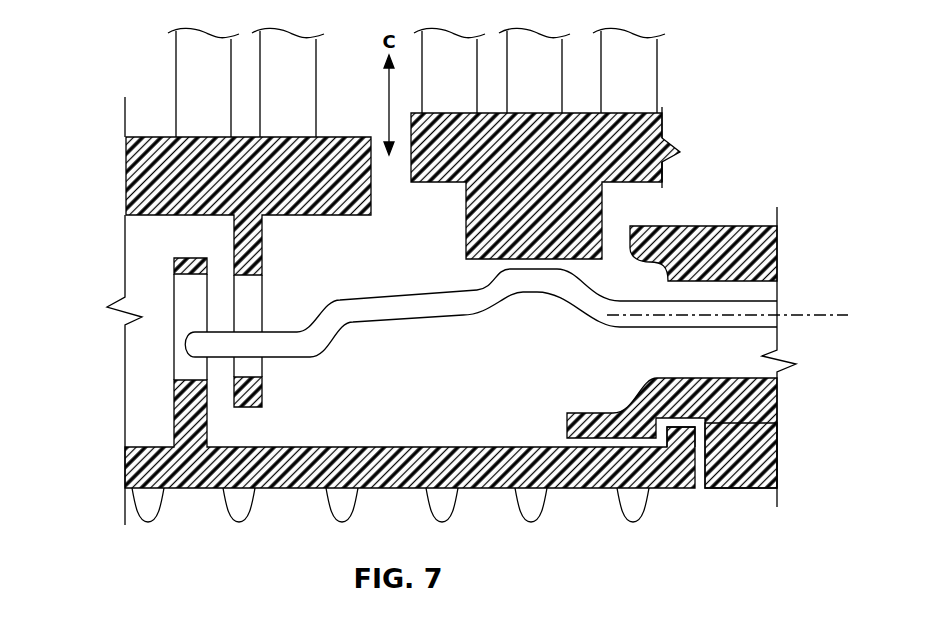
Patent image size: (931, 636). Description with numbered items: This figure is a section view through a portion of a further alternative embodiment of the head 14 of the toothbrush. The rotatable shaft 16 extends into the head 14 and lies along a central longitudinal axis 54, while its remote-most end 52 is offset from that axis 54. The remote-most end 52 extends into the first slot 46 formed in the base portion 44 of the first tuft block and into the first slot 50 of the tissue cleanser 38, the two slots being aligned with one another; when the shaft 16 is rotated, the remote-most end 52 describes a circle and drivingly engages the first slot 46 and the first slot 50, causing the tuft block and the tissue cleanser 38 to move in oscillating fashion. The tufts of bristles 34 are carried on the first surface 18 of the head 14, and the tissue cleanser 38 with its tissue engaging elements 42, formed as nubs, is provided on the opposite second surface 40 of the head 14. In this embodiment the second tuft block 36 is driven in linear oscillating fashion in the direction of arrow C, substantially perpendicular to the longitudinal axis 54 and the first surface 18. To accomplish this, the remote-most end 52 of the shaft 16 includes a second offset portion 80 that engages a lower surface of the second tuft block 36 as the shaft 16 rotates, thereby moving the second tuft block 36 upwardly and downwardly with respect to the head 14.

The head 14 is at (770, 437).
The rotatable shaft 16 is at (481, 305).
The first surface 18 is at (166, 136).
The tufts of bristles 34 is at (645, 72).
The second tuft block 36 is at (642, 164).
The tissue cleanser 38 is at (668, 476).
The second surface 40 is at (750, 493).
The tissue engaging elements 42 is at (630, 506).
The base portion 44 is at (262, 396).
The first slot 46 is at (247, 298).
The first slot 50 is at (193, 320).
The remote-most end 52 is at (393, 306).
The central longitudinal axis 54 is at (797, 316).
The second offset portion 80 is at (530, 283).